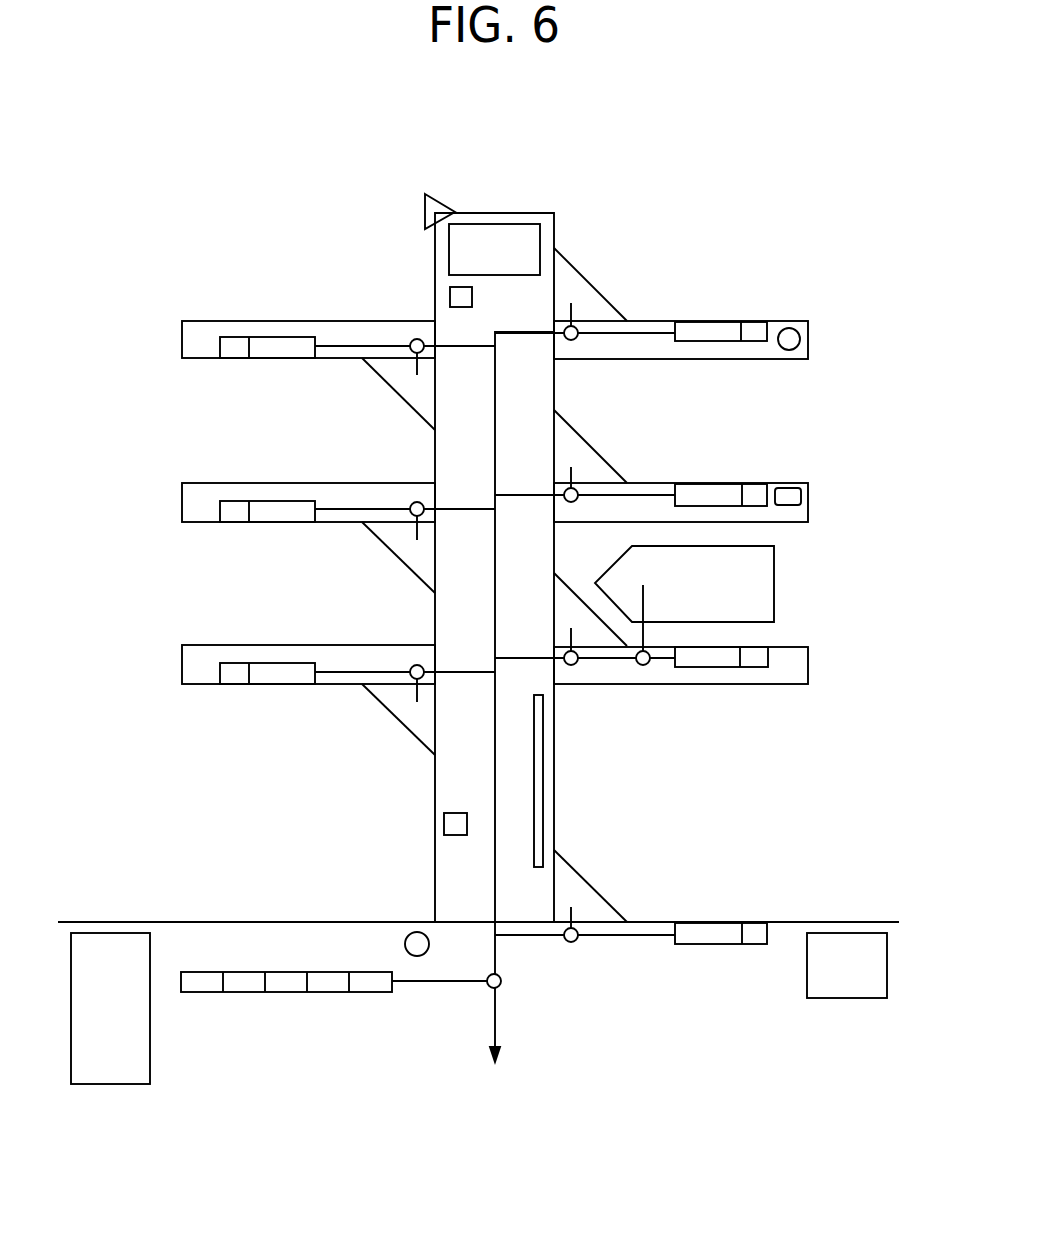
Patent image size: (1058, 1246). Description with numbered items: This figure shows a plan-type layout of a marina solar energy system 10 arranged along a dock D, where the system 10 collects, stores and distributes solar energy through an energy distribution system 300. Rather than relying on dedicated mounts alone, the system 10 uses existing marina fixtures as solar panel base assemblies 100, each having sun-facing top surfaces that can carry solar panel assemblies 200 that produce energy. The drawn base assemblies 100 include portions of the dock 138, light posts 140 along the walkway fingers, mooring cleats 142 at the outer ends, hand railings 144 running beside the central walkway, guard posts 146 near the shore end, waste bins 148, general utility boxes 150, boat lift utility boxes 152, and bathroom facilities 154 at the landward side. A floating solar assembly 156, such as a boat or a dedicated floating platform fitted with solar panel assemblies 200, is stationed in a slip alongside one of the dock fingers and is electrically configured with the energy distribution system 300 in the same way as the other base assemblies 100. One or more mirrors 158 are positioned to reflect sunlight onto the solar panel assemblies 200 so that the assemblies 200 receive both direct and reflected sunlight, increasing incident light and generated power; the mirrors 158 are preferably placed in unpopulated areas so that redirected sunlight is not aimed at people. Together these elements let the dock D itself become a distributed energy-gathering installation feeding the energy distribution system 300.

The solar energy system 10 is at (703, 47).
The dock D is at (457, 147).
The solar panel base assemblies 100 is at (663, 279).
The solar panel assemblies 200 is at (663, 457).
The energy distribution system 300 is at (588, 1012).
The dock 138 is at (496, 243).
The light posts 140 is at (789, 335).
The mooring cleats 142 is at (790, 497).
The hand railings 144 is at (543, 760).
The guard posts 146 is at (410, 940).
The waste bins 148 is at (455, 297).
The general utility boxes 150 is at (444, 830).
The boat lift utility boxes 152 is at (837, 933).
The bathroom facilities 154 is at (120, 934).
The floating solar assembly 156 is at (718, 600).
The mirrors 158 is at (428, 212).